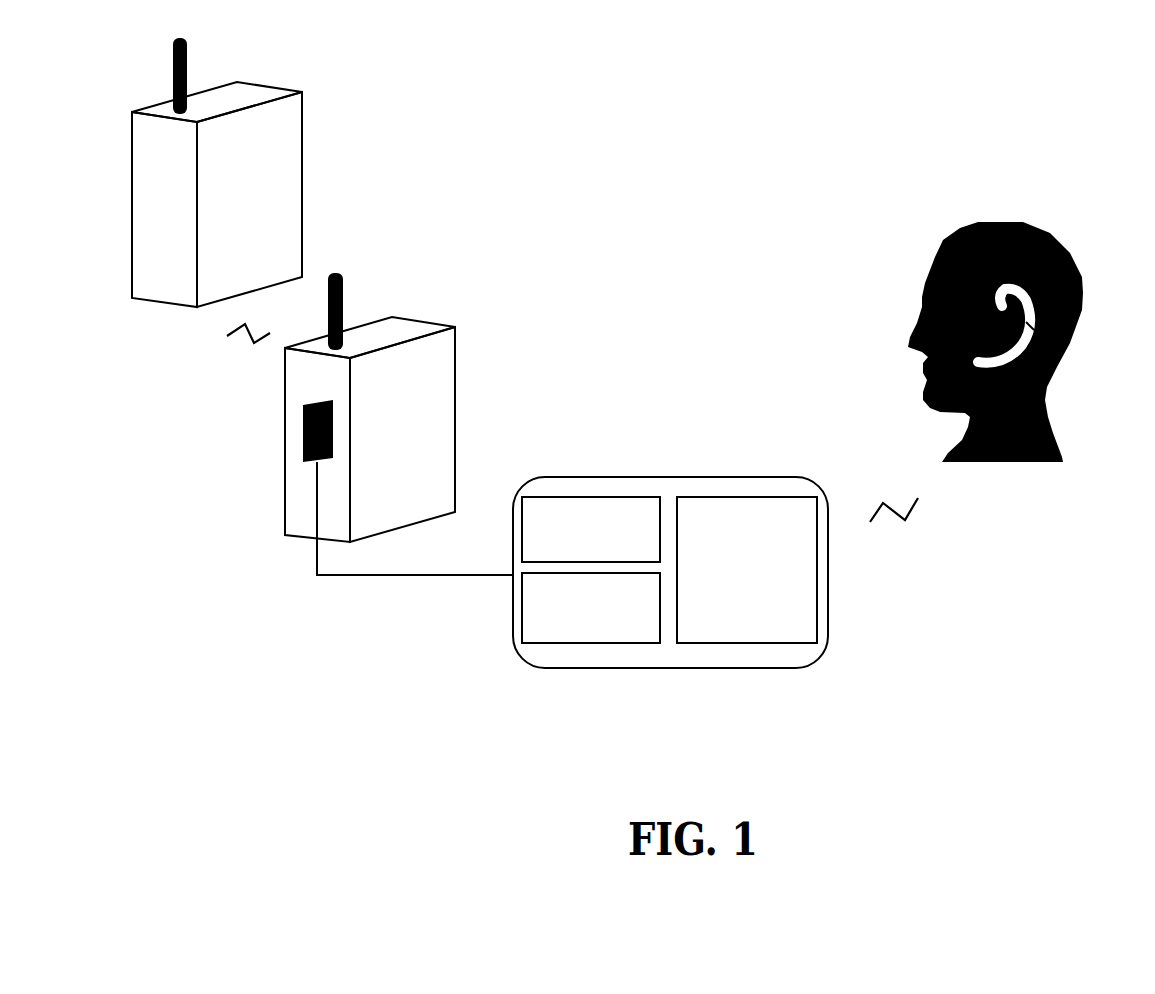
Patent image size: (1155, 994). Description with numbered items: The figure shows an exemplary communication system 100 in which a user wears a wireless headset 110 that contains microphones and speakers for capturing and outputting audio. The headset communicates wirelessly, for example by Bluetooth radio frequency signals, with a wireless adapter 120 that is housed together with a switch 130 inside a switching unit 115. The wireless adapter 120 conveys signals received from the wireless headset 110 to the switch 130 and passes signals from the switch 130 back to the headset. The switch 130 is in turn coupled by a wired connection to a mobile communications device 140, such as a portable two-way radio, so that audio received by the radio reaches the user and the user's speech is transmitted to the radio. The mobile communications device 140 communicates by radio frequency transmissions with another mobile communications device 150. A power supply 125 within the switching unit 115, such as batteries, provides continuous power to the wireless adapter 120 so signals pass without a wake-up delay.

The communication system 100 is at (634, 160).
The wireless headset 110 is at (1070, 348).
The switching unit 115 is at (673, 668).
The wireless adapter 120 is at (757, 495).
The power supply 125 is at (572, 643).
The switch 130 is at (577, 495).
The mobile communications device 140 is at (435, 320).
The other mobile communications devices 150 is at (278, 85).